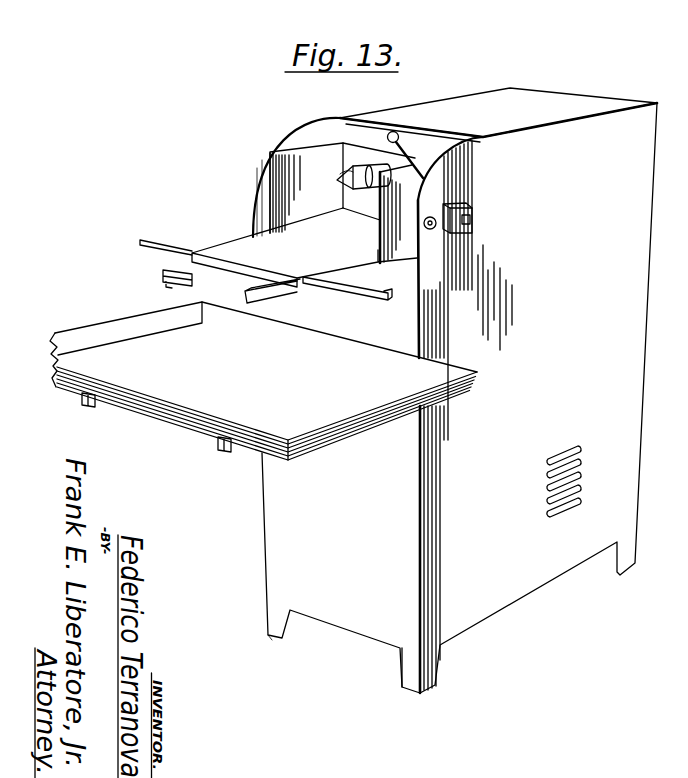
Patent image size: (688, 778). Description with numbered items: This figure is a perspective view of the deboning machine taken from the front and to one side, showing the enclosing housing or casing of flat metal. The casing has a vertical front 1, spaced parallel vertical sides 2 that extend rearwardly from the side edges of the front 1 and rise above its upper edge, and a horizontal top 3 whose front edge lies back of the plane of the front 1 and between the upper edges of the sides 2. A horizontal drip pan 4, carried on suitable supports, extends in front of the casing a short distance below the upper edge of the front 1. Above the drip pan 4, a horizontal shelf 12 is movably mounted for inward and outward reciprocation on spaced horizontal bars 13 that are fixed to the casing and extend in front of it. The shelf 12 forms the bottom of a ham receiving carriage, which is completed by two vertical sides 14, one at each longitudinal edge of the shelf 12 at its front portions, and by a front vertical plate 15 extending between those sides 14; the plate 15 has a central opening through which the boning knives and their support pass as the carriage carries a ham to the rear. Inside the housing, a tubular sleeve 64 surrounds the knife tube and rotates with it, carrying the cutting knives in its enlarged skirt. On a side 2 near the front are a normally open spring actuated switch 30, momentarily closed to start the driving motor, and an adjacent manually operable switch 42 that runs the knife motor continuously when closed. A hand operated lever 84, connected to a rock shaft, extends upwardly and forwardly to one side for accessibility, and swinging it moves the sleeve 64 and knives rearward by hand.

The vertical front 1 is at (280, 489).
The vertical sides 2 is at (262, 168).
The horizontal top 3 is at (533, 110).
The horizontal drip pan 4 is at (183, 393).
The shelf 12 is at (262, 249).
The horizontal bars 13 is at (200, 275).
The vertical sides 14 is at (302, 158).
The front vertical plate 15 is at (363, 200).
The spring actuated switch 30 is at (424, 224).
The manually operable switch 42 is at (474, 222).
The tubular sleeve 64 is at (347, 168).
The hand operated lever 84 is at (408, 158).